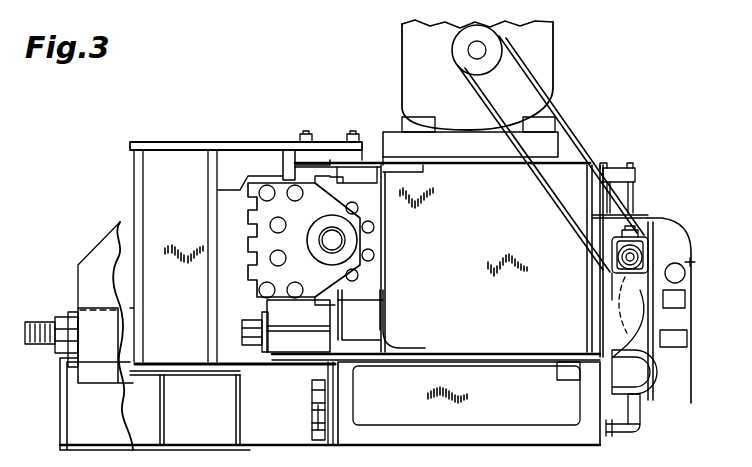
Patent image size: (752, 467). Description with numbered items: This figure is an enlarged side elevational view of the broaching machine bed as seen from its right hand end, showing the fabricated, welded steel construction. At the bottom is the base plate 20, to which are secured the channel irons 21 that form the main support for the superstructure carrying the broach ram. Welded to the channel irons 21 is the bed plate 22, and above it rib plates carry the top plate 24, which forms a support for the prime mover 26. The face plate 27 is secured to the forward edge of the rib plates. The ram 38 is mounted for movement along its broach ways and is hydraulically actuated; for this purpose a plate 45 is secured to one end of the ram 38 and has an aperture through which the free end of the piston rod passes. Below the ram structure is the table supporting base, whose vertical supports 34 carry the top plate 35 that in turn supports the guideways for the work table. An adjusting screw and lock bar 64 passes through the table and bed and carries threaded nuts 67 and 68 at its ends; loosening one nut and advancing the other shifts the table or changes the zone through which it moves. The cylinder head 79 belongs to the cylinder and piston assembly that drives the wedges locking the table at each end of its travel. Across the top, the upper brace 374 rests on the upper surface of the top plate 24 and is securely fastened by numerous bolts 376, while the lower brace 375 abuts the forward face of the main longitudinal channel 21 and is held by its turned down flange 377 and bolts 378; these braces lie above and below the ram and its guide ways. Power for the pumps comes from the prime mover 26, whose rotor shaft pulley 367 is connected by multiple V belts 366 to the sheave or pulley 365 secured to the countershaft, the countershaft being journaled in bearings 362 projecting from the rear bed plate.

The upper brace 374 is at (200, 150).
The bolts 376 is at (352, 134).
The plate 45 is at (273, 182).
The ram 38 is at (248, 218).
The prime mover 26 is at (545, 53).
The pulley 367 is at (462, 50).
The V belts 366 is at (573, 132).
The top plate 24 is at (490, 162).
The cylinder head 79 is at (633, 174).
The bearings 362 is at (613, 303).
The sheave or pulley 365 is at (657, 248).
The bed plate 22 is at (495, 353).
The top plate 35 is at (290, 376).
The face plate 27 is at (387, 331).
The nut 68 is at (255, 342).
The channel irons 21 is at (360, 416).
The turned down flange 377 is at (328, 397).
The bolts 378 is at (318, 408).
The lower brace 375 is at (192, 364).
The base plate 20 is at (540, 447).
The vertical supports 34 is at (68, 421).
The adjusting screw and lock bar 64 is at (48, 307).
The nut 67 is at (70, 312).